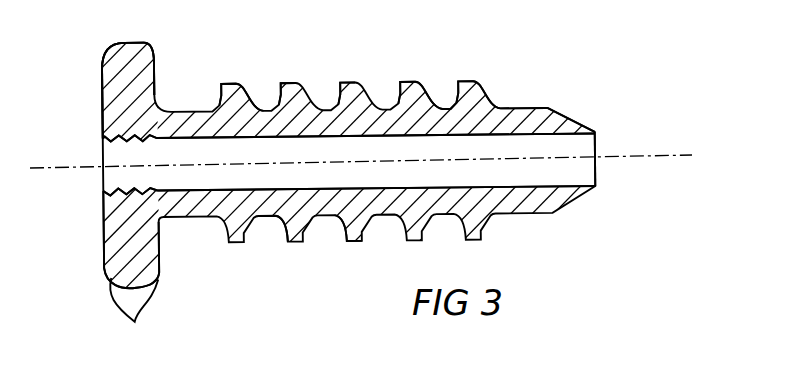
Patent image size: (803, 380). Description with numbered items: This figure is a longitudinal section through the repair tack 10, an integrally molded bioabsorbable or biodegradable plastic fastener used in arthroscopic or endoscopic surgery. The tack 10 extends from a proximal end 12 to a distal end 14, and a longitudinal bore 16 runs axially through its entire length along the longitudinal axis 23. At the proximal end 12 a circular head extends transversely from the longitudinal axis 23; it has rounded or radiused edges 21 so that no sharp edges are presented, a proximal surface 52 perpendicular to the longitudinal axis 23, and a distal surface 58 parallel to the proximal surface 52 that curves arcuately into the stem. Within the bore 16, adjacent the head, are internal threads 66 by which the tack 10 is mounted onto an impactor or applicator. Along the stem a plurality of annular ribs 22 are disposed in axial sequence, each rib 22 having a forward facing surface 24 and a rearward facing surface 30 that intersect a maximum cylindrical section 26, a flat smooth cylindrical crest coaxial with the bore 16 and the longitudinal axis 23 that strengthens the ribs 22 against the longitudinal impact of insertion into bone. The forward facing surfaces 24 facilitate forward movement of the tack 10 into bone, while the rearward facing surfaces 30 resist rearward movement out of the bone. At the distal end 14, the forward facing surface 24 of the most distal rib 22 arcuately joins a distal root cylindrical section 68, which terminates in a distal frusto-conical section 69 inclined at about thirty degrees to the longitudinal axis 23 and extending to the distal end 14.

The repair tack 10 is at (338, 186).
The proximal end 12 is at (105, 265).
The distal end 14 is at (598, 137).
The longitudinal bore 16 is at (518, 184).
The rounded or radiused edges 21 is at (134, 316).
The annular ribs 22 is at (410, 82).
The longitudinal axis 23 is at (622, 157).
The forward facing surface 24 is at (249, 96).
The maximum cylindrical section 26 is at (226, 84).
The rearward facing surface 30 is at (345, 90).
The proximal surface 52 is at (103, 93).
The distal surface 58 is at (155, 66).
The internal threads 66 is at (104, 185).
The distal root cylindrical section 68 is at (530, 106).
The distal frusto-conical section 69 is at (575, 113).